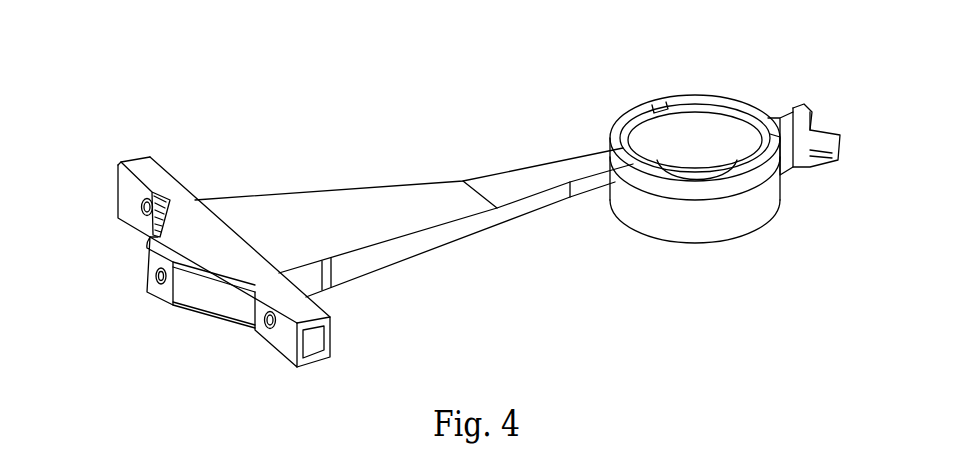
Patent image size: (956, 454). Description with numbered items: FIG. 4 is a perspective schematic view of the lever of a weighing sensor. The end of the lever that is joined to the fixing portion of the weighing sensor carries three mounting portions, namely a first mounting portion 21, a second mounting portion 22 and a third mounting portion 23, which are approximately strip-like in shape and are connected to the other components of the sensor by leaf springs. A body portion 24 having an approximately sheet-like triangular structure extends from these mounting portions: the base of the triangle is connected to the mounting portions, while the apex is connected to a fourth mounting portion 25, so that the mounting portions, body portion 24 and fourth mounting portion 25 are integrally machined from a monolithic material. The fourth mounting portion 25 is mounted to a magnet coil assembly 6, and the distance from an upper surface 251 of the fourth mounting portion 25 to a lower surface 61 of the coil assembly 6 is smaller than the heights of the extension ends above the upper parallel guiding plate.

The first mounting portion 21 is at (133, 200).
The second mounting portion 22 is at (273, 337).
The third mounting portion 23 is at (162, 290).
The body portion 24 is at (403, 220).
The fourth mounting portion 25 is at (707, 188).
The upper surface 251 is at (622, 122).
The magnet coil assembly 6 is at (763, 193).
The lower surface 61 is at (653, 232).